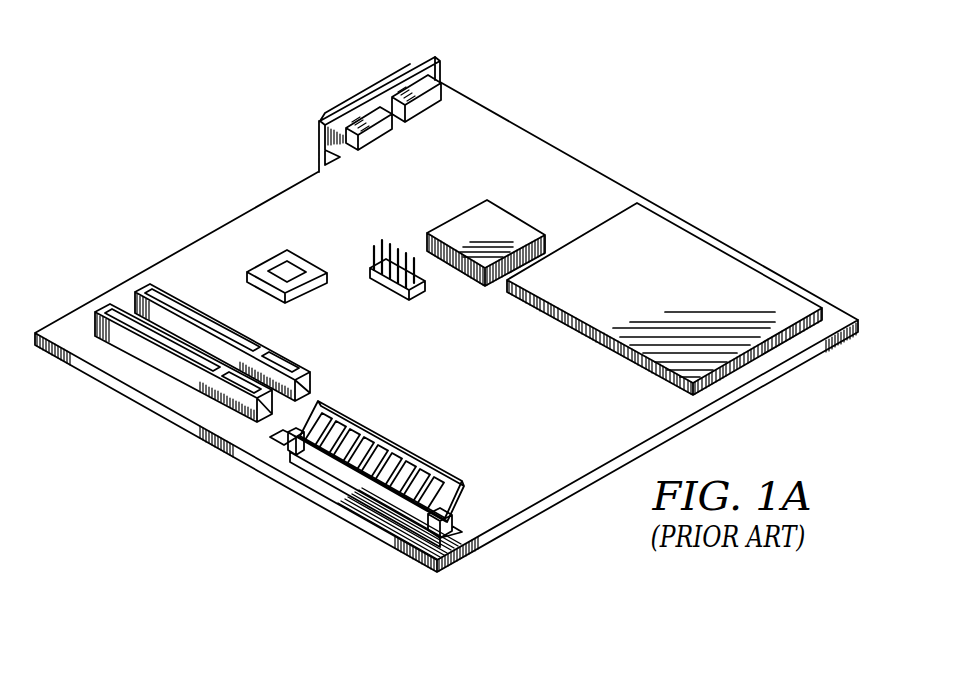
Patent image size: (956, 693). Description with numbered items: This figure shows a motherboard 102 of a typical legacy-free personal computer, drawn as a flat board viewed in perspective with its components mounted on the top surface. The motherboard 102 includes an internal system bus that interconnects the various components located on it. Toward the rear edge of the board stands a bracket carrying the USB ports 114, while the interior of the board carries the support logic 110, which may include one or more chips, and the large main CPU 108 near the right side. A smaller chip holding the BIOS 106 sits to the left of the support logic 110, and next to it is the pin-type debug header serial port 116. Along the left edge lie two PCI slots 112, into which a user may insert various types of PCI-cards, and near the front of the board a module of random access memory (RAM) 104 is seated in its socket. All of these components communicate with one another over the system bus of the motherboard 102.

The motherboard 102 is at (222, 232).
The random access memory (RAM) 104 is at (450, 482).
The BIOS 106 is at (302, 262).
The main CPU 108 is at (707, 247).
The support logic 110 is at (477, 213).
The PCI slots 112 is at (118, 302).
The USB ports 114 is at (345, 97).
The debug header serial port 116 is at (423, 278).